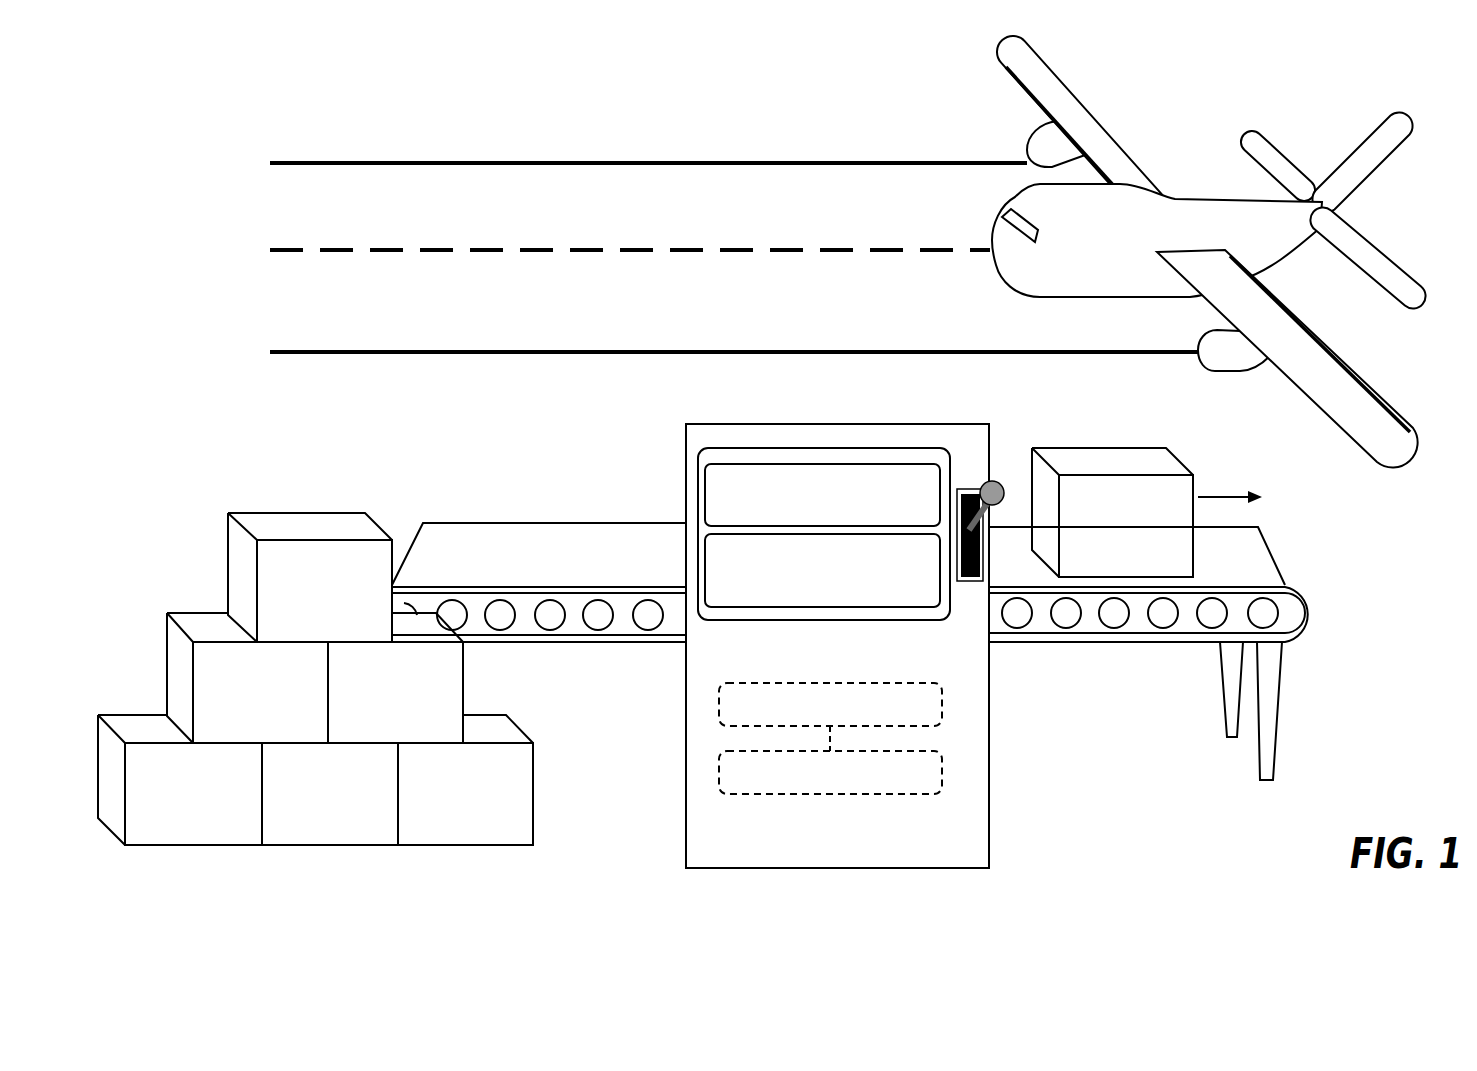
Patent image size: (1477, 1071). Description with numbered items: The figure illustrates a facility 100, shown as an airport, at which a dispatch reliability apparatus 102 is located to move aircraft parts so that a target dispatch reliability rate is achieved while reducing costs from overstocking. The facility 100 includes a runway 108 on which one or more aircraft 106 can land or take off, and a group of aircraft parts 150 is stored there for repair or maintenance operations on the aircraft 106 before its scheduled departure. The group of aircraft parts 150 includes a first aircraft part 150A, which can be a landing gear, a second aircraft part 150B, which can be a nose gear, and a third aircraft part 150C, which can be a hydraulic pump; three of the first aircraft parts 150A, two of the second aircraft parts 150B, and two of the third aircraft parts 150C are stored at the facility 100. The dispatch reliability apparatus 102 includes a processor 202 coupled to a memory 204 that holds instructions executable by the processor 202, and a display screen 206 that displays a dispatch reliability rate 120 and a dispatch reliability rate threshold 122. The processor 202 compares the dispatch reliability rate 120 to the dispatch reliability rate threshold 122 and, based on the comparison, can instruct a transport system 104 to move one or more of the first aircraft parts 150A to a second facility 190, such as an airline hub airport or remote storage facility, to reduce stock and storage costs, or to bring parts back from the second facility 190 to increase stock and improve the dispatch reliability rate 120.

The facility 100 is at (780, 449).
The dispatch reliability apparatus 102 is at (745, 626).
The transport system 104 is at (1110, 642).
The aircraft 106 is at (1075, 93).
The runway 108 is at (683, 163).
The dispatch reliability rate 120 is at (867, 521).
The dispatch reliability rate threshold 122 is at (920, 593).
The group of aircraft parts 150 is at (315, 625).
The first aircraft part 150A is at (298, 629).
The second aircraft part 150B is at (369, 729).
The third aircraft part 150C is at (304, 829).
The second facility 190 is at (1330, 496).
The processor 202 is at (903, 716).
The memory 204 is at (891, 784).
The display screen 206 is at (858, 502).